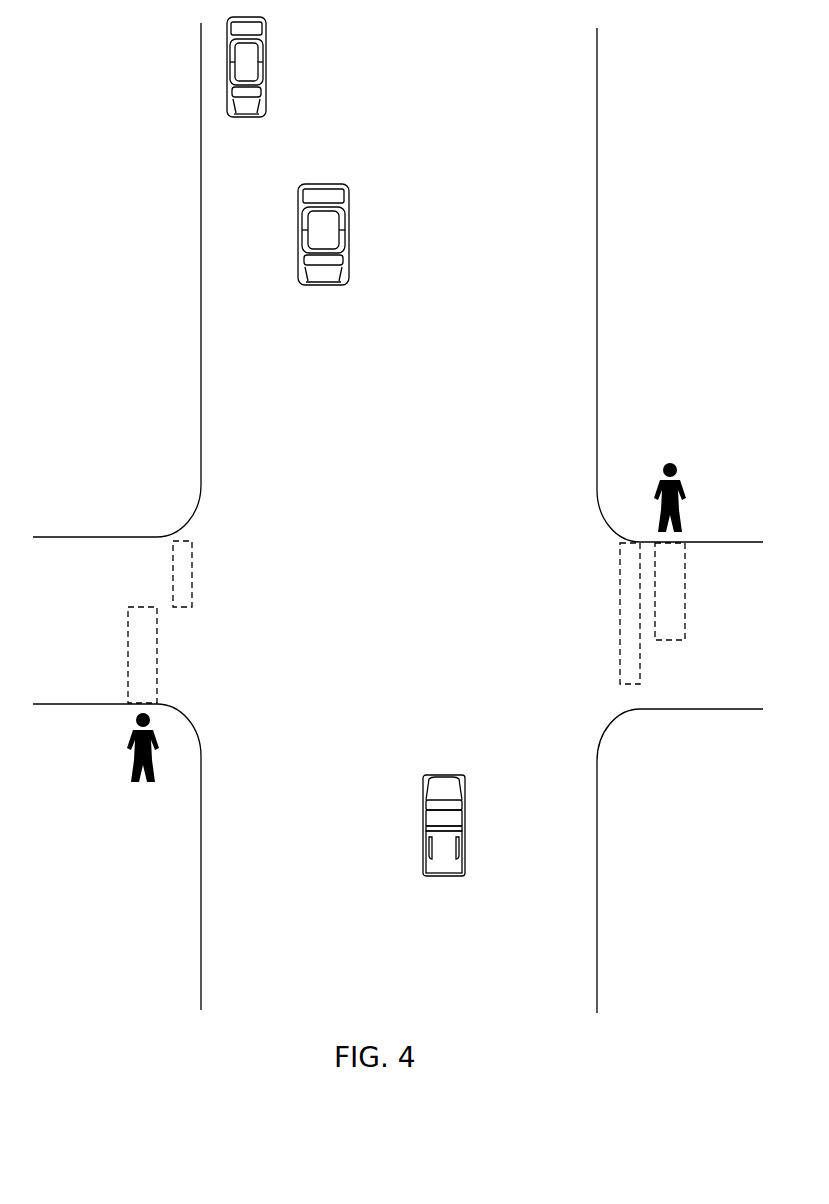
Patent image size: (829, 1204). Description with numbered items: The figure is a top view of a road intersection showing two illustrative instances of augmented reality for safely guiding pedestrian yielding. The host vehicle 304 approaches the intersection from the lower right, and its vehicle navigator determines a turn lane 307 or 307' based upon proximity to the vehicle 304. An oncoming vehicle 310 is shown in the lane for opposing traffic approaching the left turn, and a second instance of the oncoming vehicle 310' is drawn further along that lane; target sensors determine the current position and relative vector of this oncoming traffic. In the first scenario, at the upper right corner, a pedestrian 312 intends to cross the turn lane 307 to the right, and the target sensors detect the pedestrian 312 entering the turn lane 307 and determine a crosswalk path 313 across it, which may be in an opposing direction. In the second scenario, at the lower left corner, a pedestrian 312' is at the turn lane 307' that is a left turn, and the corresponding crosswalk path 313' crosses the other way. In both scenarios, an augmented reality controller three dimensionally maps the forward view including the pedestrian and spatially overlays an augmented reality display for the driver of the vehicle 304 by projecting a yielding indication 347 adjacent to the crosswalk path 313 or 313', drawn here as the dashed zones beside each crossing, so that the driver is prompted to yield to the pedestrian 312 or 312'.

The vehicle 304 is at (463, 804).
The turn lane 307 is at (734, 624).
The turn lane 307' is at (81, 612).
The oncoming vehicle 310 is at (200, 67).
The oncoming vehicle 310' is at (310, 218).
The pedestrian 312 is at (713, 464).
The pedestrian 312' is at (105, 775).
The crosswalk path 313 is at (709, 591).
The crosswalk path 313' is at (204, 667).
The yielding indication 347 is at (173, 560).